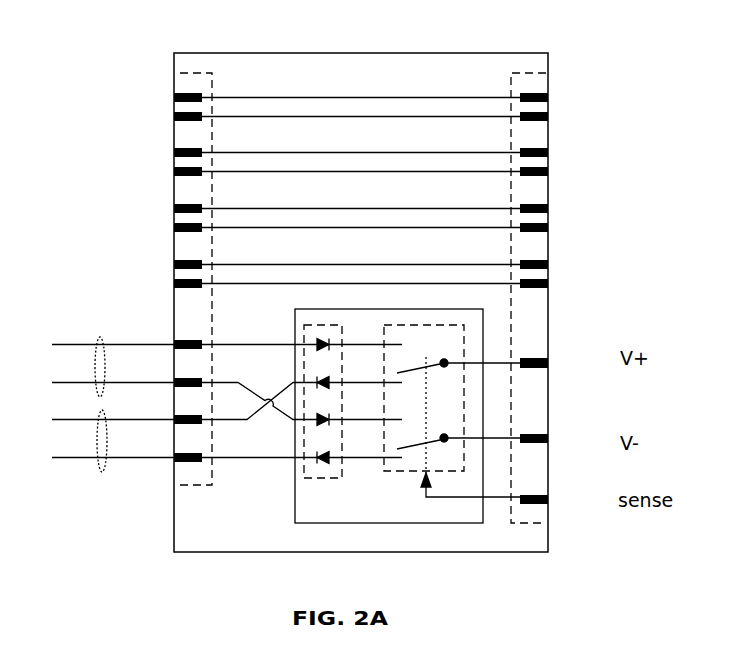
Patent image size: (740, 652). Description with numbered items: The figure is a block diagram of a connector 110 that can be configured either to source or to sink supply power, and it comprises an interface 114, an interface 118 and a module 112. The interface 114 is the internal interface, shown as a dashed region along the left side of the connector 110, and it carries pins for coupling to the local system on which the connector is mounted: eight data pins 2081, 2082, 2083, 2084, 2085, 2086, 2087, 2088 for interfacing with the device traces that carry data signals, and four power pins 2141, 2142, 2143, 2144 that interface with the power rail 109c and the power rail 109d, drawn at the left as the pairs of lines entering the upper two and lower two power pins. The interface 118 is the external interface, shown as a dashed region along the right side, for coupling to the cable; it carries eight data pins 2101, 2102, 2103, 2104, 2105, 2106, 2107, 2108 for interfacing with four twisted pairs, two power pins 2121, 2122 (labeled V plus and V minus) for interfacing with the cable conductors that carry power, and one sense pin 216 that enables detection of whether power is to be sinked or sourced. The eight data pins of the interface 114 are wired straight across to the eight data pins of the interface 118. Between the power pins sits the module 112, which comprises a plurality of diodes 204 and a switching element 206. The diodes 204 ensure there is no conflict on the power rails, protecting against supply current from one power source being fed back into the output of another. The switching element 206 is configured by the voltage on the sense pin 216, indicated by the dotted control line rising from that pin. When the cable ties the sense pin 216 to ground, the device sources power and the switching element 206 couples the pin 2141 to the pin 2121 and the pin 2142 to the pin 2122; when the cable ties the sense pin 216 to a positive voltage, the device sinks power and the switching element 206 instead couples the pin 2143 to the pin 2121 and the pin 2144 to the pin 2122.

The connector 110 is at (201, 53).
The interface 114 is at (212, 85).
The interface 118 is at (510, 84).
The data pin 2081 is at (174, 94).
The data pin 2082 is at (174, 113).
The data pin 2083 is at (174, 149).
The data pin 2084 is at (174, 168).
The data pin 2085 is at (174, 205).
The data pin 2086 is at (174, 224).
The data pin 2087 is at (174, 261).
The data pin 2088 is at (174, 280).
The data pin 2101 is at (549, 94).
The data pin 2102 is at (549, 113).
The data pin 2103 is at (549, 149).
The data pin 2104 is at (549, 168).
The data pin 2105 is at (549, 205).
The data pin 2106 is at (549, 224).
The data pin 2107 is at (549, 261).
The data pin 2108 is at (549, 280).
The power rail 109c is at (100, 337).
The power rail 109d is at (102, 472).
The power pin 2141 is at (174, 341).
The power pin 2142 is at (174, 379).
The power pin 2143 is at (174, 416).
The power pin 2144 is at (174, 454).
The module 112 is at (295, 326).
The diodes 204 is at (316, 479).
The switching element 206 is at (408, 471).
The power pin 2121 is at (549, 359).
The power pin 2122 is at (549, 435).
The sense pin 216 is at (549, 496).